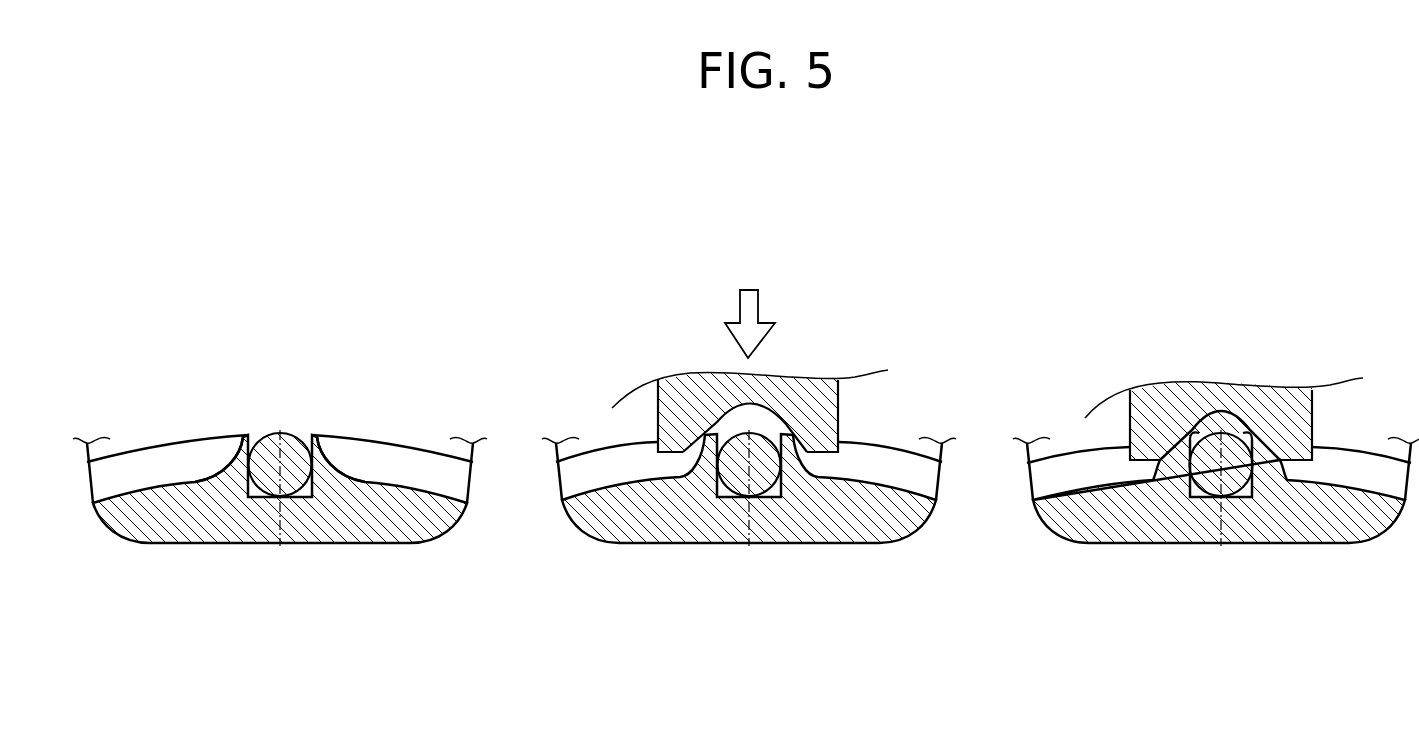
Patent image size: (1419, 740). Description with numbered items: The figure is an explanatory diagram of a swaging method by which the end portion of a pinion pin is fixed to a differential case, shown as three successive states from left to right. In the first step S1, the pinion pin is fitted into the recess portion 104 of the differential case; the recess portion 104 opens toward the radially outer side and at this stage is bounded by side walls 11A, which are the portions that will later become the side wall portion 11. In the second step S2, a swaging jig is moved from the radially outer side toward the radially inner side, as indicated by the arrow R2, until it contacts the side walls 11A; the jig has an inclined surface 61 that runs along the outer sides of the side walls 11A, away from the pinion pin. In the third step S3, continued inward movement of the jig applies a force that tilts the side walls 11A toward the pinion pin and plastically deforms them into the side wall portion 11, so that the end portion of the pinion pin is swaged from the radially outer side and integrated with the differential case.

The side walls 11A is at (235, 452).
The side wall portion 11 is at (1180, 458).
The recess portion 104 is at (1242, 492).
The inclined surface 61 is at (722, 425).
The arrow R2 is at (738, 298).
The step of fitting the pinion pin in the recess portion S1 is at (344, 326).
The step of moving the swaging jig S2 is at (865, 246).
The step of plastically deforming the side walls S3 is at (1337, 246).